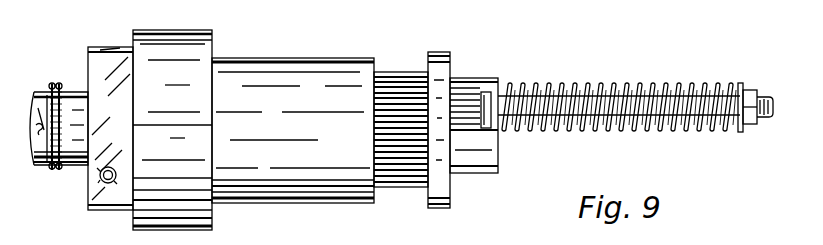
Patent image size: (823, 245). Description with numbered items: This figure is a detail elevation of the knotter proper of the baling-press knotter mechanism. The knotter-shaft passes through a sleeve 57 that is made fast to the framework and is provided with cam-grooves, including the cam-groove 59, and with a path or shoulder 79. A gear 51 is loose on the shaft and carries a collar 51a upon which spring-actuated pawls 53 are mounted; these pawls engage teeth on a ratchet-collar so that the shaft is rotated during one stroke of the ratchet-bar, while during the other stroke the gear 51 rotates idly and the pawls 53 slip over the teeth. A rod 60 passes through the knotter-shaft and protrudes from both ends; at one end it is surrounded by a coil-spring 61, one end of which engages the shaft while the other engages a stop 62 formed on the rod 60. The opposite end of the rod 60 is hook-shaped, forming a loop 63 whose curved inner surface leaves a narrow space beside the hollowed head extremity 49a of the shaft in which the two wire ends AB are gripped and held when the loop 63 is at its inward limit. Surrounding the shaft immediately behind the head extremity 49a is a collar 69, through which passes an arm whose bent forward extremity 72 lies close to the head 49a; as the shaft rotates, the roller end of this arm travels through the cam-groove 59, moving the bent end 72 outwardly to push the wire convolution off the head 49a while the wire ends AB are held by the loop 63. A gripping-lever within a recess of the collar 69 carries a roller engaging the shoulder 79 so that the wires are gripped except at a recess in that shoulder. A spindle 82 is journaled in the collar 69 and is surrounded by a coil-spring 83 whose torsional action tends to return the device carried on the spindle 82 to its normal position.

The loop 63 is at (32, 150).
The forward extremity 72 is at (78, 86).
The wire ends AB is at (54, 86).
The collar 69 is at (110, 53).
The spindle 82 is at (117, 173).
The coil-spring 83 is at (104, 186).
The head extremity 49a is at (76, 168).
The shoulder 79 is at (132, 221).
The sleeve 57 is at (293, 119).
The cam-groove 59 is at (185, 243).
The gear 51 is at (401, 115).
The collar 51a is at (455, 55).
The spring-actuated pawls 53 is at (465, 96).
The rod 60 is at (598, 90).
The coil-spring 61 is at (648, 88).
The stop 62 is at (755, 99).